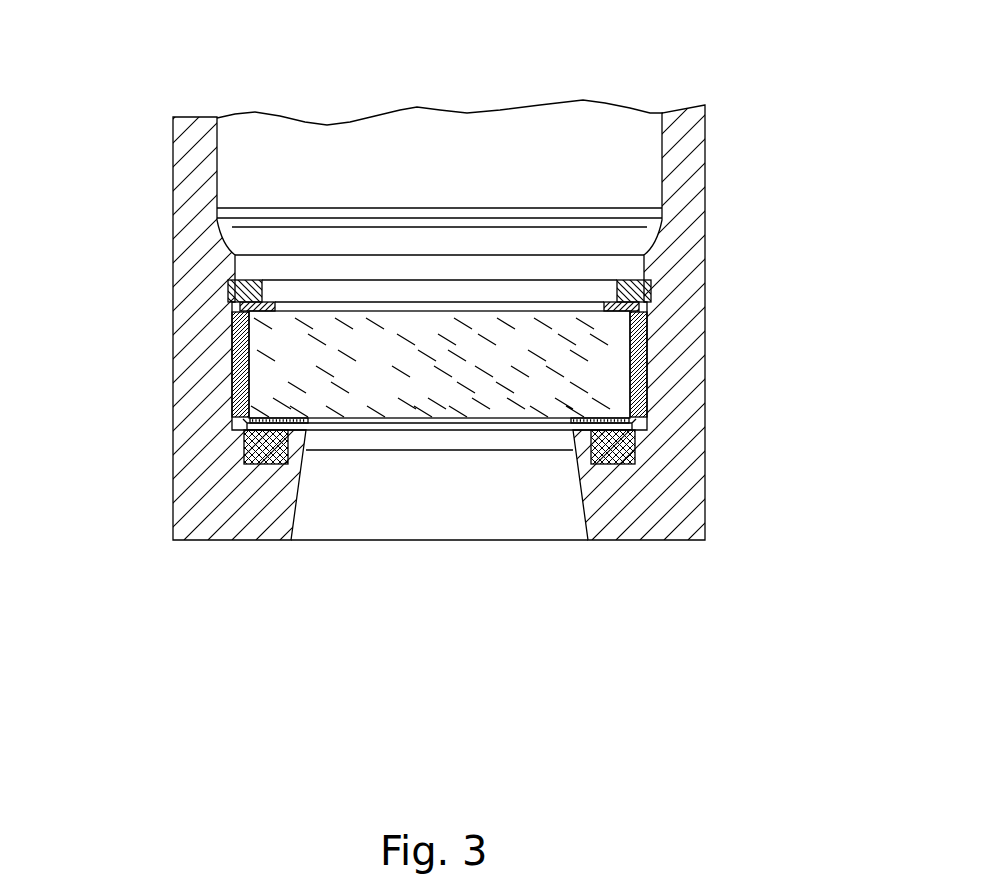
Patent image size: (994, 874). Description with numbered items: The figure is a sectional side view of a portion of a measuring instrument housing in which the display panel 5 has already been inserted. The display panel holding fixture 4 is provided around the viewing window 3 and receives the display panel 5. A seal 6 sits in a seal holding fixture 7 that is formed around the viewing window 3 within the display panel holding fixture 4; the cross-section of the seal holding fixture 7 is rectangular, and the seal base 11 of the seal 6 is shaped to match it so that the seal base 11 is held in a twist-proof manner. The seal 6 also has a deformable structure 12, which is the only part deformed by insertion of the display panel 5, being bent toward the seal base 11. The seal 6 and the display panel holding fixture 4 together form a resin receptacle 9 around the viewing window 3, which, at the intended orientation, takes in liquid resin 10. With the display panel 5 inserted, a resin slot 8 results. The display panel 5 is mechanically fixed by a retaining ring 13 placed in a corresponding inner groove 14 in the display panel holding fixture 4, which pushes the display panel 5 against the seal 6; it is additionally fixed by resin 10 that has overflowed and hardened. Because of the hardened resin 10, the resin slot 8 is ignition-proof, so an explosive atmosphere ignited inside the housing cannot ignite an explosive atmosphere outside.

The viewing window 3 is at (388, 555).
The display panel holding fixture 4 is at (733, 127).
The display panel 5 is at (270, 328).
The seal 6 is at (265, 468).
The seal holding fixture 7 is at (267, 470).
The resin slot 8 is at (232, 367).
The resin receptacle 9 is at (233, 429).
The resin 10 is at (236, 335).
The seal base 11 is at (243, 468).
The deformable structure 12 is at (250, 418).
The retaining ring 13 is at (238, 290).
The inner groove 14 is at (246, 305).